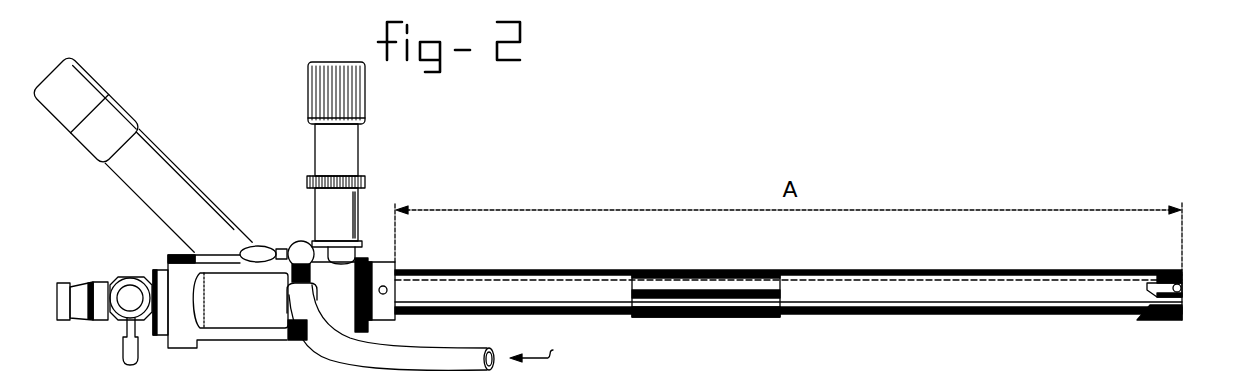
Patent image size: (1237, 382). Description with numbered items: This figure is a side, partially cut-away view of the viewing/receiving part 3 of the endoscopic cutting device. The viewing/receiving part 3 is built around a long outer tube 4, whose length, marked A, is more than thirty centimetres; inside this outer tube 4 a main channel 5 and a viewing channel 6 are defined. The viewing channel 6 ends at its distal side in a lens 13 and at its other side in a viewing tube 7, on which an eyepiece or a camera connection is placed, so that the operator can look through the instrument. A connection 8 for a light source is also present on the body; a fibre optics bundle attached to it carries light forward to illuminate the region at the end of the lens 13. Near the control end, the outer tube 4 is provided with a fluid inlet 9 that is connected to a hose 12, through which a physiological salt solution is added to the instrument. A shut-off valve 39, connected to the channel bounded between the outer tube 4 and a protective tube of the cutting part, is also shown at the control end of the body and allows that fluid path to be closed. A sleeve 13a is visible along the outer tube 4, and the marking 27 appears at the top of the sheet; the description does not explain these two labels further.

The viewing/receiving part 3 is at (285, 66).
The outer tube 4 is at (886, 283).
The main channel 5 is at (1157, 312).
The viewing channel 6 is at (1155, 282).
The viewing tube 7 is at (174, 178).
The connection for a light source 8 is at (352, 210).
The fluid inlet 9 is at (538, 346).
The hose 12 is at (324, 352).
The lens 13 is at (1184, 288).
The sleeve 13a is at (698, 275).
The sheet reference 27 is at (716, 11).
The shut-off valve 39 is at (118, 333).